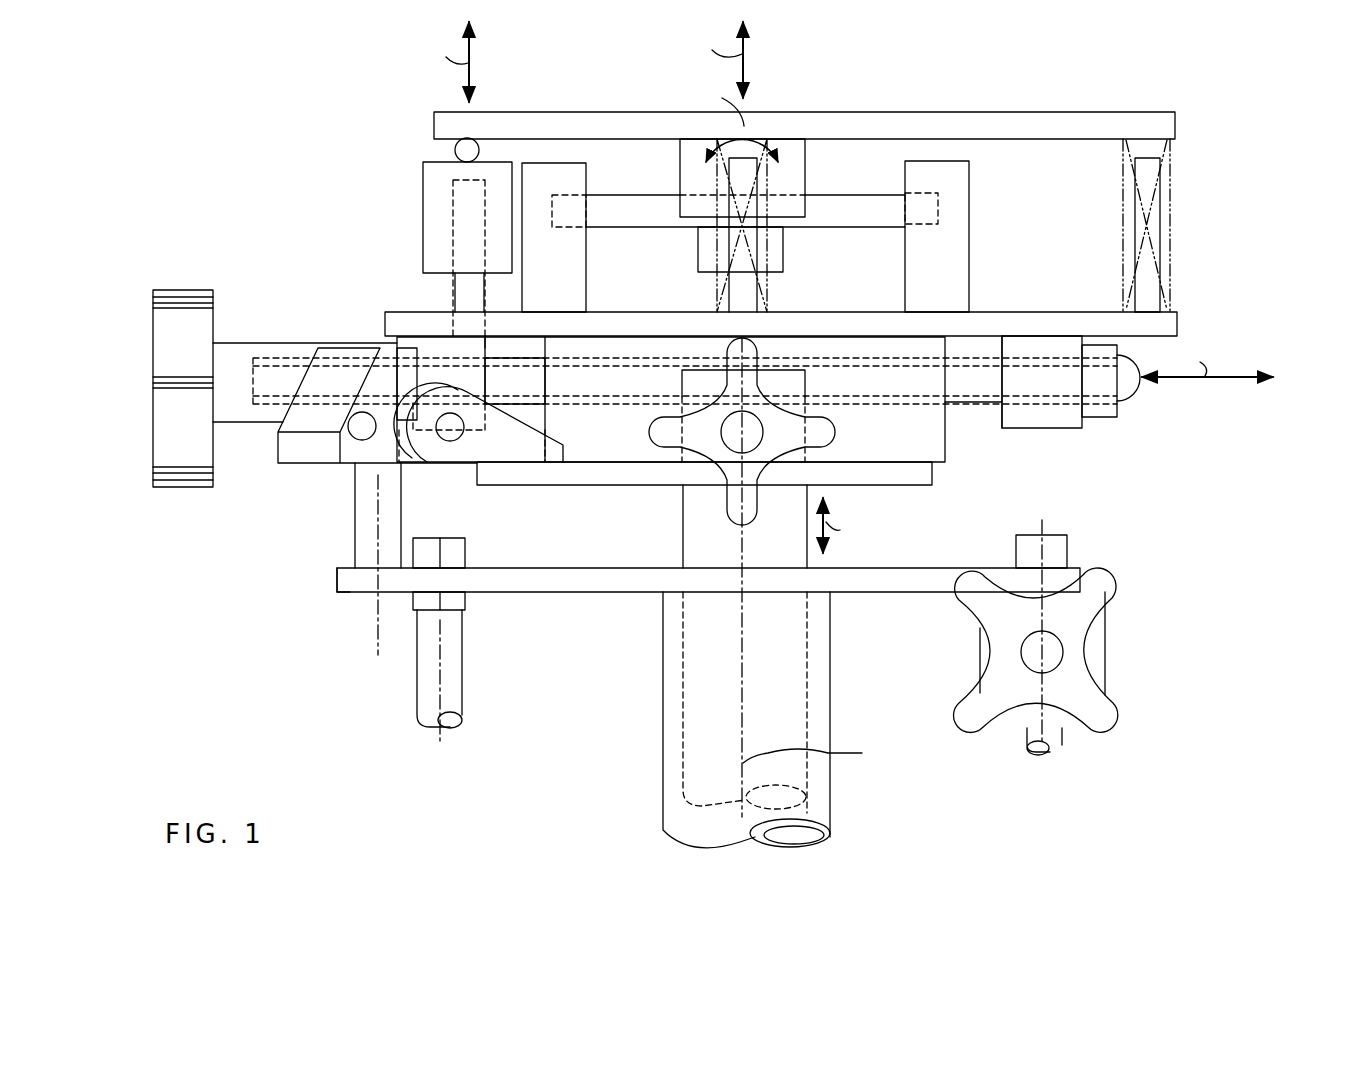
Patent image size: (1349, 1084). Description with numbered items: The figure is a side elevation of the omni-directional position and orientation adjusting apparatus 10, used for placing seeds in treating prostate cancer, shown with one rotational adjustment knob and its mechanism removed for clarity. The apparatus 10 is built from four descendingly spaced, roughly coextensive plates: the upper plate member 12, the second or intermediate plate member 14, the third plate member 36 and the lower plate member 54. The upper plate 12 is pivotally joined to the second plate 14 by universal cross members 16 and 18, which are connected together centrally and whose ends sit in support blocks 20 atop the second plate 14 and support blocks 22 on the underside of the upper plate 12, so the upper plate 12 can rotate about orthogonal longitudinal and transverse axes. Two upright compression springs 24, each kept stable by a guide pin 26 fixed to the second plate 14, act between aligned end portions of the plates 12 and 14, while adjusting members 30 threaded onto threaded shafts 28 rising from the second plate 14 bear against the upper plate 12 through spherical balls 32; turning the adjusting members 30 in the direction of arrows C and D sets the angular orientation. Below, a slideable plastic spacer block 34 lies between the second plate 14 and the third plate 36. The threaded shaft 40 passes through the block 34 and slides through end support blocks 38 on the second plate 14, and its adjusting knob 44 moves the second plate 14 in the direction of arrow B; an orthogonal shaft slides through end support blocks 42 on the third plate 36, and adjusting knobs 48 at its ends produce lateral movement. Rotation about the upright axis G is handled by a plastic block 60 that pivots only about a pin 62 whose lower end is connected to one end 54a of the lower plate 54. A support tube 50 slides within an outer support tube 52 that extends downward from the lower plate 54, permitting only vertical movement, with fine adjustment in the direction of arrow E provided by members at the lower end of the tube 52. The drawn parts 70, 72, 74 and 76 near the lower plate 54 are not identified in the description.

The omni-directional position and orientation adjusting apparatus 10 is at (1228, 441).
The upper plate member 12 is at (1046, 111).
The second plate member 14 is at (1049, 310).
The universal cross member 16 is at (855, 193).
The universal cross member 18 is at (772, 130).
The support blocks 20 is at (560, 262).
The support blocks 22 is at (680, 170).
The upright compression springs 24 is at (760, 290).
The guide pin 26 is at (740, 285).
The threaded shafts 28 is at (455, 290).
The adjusting members 30 is at (423, 200).
The spherical ball 32 is at (455, 150).
The plastic spacer block 34 is at (946, 446).
The third plate member 36 is at (896, 485).
The end support blocks 38 is at (405, 328).
The threaded shaft 40 is at (983, 403).
The end support blocks 42 is at (688, 372).
The adjusting knob 44 is at (191, 286).
The adjusting knobs 48 is at (692, 498).
The support tube 50 is at (683, 548).
The outer support tube 52 is at (665, 728).
The lower plate member 54 is at (530, 592).
The end of lower plate 54a is at (342, 592).
The plastic block 60 is at (307, 464).
The pin 62 is at (355, 529).
The stem 70 is at (1062, 740).
The knob 72 is at (1105, 672).
The knob hole 74 is at (1087, 615).
The bolt 76 is at (417, 659).